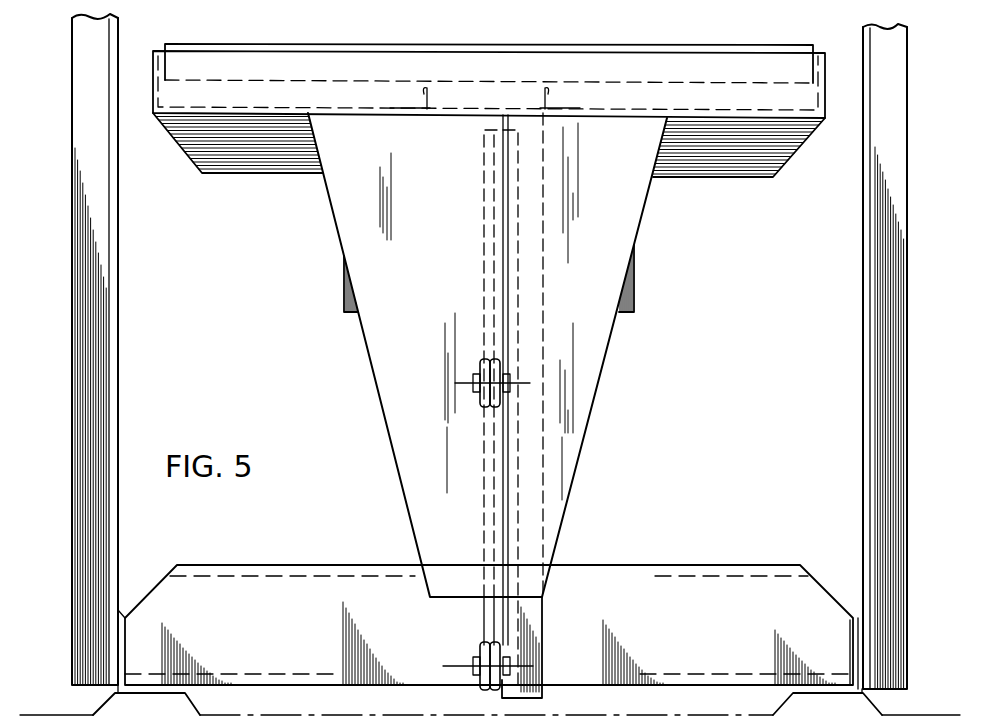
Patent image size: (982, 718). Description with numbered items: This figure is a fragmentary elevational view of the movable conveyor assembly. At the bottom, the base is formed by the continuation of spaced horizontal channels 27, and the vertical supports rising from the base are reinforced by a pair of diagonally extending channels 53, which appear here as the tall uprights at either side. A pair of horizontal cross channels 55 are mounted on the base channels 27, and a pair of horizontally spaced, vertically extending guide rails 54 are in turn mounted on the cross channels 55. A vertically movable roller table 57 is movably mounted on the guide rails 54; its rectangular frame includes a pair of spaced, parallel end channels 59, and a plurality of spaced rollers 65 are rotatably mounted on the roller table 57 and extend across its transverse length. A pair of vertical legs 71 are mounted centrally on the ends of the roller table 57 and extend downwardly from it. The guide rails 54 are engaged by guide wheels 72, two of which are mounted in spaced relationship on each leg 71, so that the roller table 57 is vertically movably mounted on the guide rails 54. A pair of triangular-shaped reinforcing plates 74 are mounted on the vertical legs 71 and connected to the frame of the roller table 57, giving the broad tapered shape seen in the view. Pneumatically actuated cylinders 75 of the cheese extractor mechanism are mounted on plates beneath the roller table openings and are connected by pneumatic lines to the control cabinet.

The horizontal channels 27 is at (213, 712).
The diagonally extending channels 53 is at (82, 460).
The guide rails 54 is at (483, 622).
The horizontal cross channels 55 is at (332, 566).
The roller table 57 is at (499, 94).
The end channels 59 is at (367, 63).
The rollers 65 is at (302, 47).
The vertical legs 71 is at (533, 623).
The guide wheels 72 is at (472, 676).
The triangular-shaped reinforcing plates 74 is at (596, 374).
The pneumatically actuated cylinders 75 is at (636, 290).